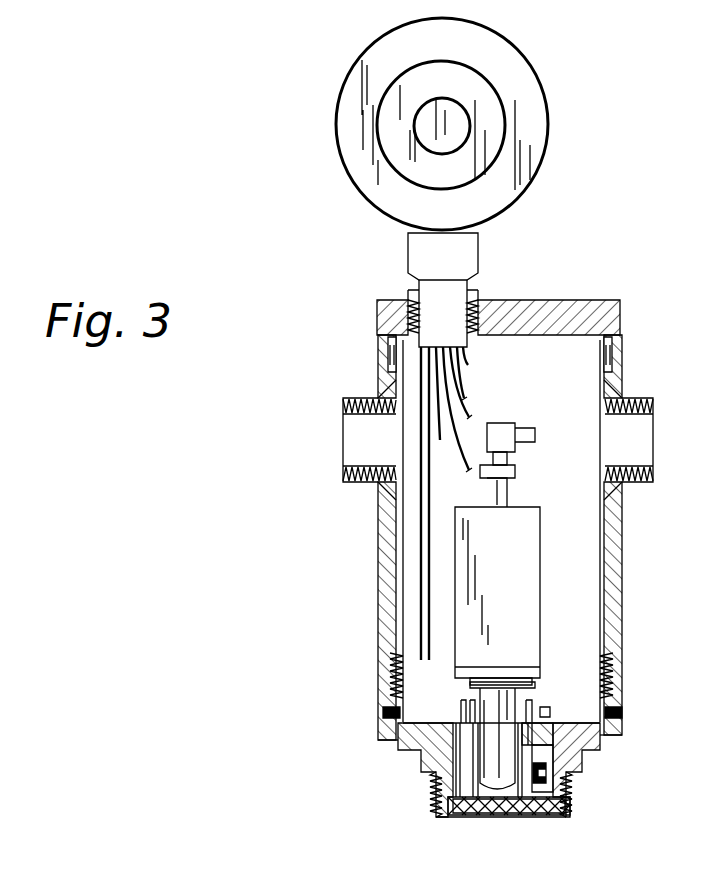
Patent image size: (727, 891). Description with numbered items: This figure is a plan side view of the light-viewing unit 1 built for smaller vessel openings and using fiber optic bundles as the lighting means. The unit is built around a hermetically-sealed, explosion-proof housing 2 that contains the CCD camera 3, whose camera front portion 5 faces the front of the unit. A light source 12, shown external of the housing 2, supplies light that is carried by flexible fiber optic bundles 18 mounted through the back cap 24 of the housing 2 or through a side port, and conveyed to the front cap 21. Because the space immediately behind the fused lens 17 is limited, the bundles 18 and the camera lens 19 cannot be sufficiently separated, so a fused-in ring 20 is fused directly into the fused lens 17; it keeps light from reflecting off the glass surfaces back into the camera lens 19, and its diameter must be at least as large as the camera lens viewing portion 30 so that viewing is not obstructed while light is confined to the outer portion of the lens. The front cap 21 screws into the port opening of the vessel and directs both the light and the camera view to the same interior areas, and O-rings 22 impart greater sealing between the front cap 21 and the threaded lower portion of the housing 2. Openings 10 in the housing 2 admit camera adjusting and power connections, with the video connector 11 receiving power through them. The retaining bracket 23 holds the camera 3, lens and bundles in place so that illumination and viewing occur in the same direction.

The light-viewing unit 1 is at (582, 228).
The housing 2 is at (615, 555).
The camera 3 is at (533, 548).
The camera front portion 5 is at (491, 703).
The openings 10 is at (352, 430).
The video connector 11 is at (507, 432).
The light source 12 is at (537, 97).
The fused lens 17 is at (483, 818).
The fiber optic bundles 18 is at (466, 402).
The camera lens 19 is at (518, 710).
The fused-in ring 20 is at (492, 818).
The front cap 21 is at (430, 793).
The O-rings 22 is at (380, 705).
The retaining bracket 23 is at (420, 752).
The back cap 24 is at (595, 298).
The camera lens viewing portion 30 is at (520, 818).